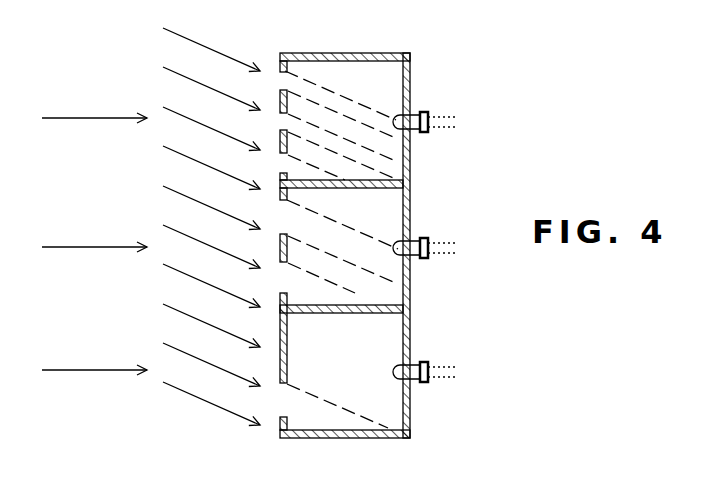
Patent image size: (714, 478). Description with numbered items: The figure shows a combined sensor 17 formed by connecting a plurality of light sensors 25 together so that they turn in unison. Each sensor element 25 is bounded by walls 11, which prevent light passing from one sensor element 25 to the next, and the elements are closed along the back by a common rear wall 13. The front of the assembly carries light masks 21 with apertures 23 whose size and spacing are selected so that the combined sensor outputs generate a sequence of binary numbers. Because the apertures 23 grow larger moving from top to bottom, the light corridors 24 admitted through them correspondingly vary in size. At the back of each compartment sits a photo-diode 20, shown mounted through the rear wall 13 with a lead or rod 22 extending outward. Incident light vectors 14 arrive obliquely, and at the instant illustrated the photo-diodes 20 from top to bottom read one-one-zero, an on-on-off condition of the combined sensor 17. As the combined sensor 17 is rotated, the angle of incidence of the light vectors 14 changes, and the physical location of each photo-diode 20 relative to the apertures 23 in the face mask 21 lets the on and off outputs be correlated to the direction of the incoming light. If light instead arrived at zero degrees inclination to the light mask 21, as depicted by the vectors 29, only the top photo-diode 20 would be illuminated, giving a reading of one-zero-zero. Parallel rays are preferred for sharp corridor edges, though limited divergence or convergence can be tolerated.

The wall 11 is at (322, 53).
The back wall 13 is at (410, 72).
The light vector 14 is at (203, 45).
The combined sensor 17 is at (395, 40).
The photo-diode 20 is at (413, 115).
The light mask 21 is at (289, 109).
The rod 22 is at (460, 128).
The aperture 23 is at (278, 81).
The light corridor 24 is at (368, 120).
The light sensor 25 is at (371, 89).
The light vector 29 is at (108, 118).